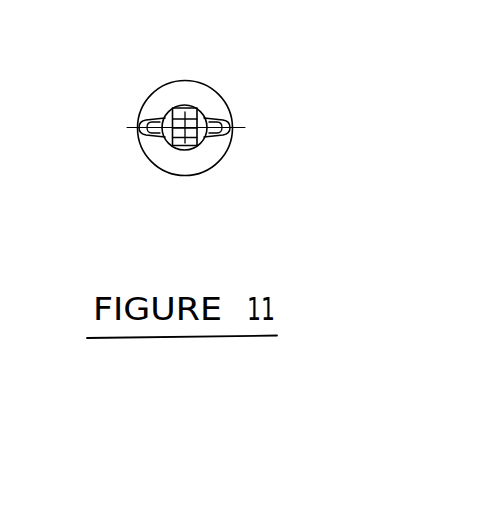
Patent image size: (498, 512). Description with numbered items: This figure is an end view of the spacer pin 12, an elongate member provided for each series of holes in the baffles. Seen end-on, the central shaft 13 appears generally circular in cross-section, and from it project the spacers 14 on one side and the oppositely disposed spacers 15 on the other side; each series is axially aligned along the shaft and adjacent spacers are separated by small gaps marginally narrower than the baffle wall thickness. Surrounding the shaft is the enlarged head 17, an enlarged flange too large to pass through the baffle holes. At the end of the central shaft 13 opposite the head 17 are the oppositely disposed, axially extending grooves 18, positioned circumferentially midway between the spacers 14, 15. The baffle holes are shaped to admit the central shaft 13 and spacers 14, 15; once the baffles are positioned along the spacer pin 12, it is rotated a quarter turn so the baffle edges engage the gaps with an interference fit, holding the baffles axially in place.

The spacer pin 12 is at (277, 91).
The central shaft 13 is at (170, 138).
The spacers 14 is at (158, 118).
The spacers 15 is at (217, 120).
The enlarged head 17 is at (213, 150).
The grooves 18 is at (196, 87).